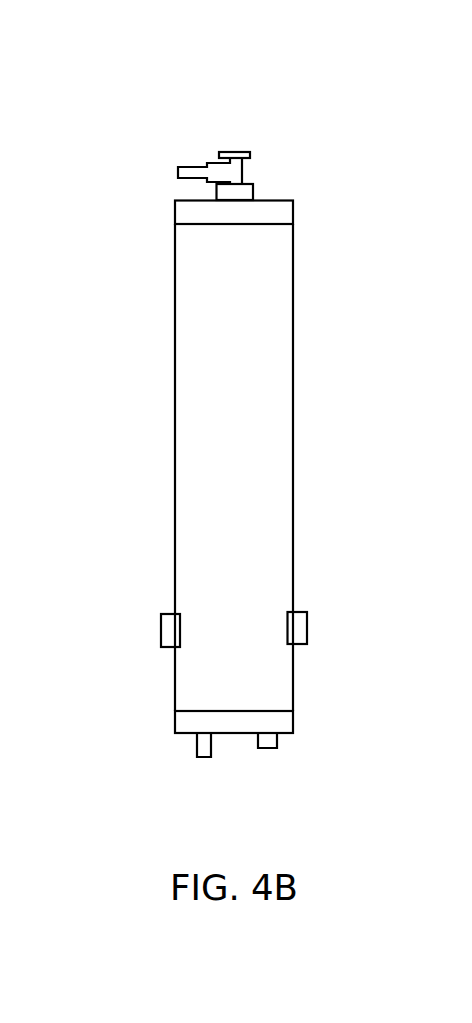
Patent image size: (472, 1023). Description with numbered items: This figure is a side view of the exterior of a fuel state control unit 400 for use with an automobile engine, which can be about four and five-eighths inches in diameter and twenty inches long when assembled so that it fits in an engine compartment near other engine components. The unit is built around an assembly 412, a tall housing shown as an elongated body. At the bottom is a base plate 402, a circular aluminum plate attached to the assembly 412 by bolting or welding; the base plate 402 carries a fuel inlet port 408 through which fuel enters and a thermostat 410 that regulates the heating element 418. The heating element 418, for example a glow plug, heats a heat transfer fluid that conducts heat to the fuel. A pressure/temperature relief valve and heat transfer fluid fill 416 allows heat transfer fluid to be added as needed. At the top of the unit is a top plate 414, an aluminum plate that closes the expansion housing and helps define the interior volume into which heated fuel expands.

The fuel state control unit 400 is at (147, 110).
The base plate 402 is at (283, 722).
The fuel inlet port 408 is at (267, 745).
The thermostat 410 is at (200, 750).
The assembly 412 is at (192, 422).
The top plate 414 is at (282, 218).
The pressure/temperature relief valve and heat transfer fluid fill 416 is at (295, 623).
The heating element 418 is at (172, 625).